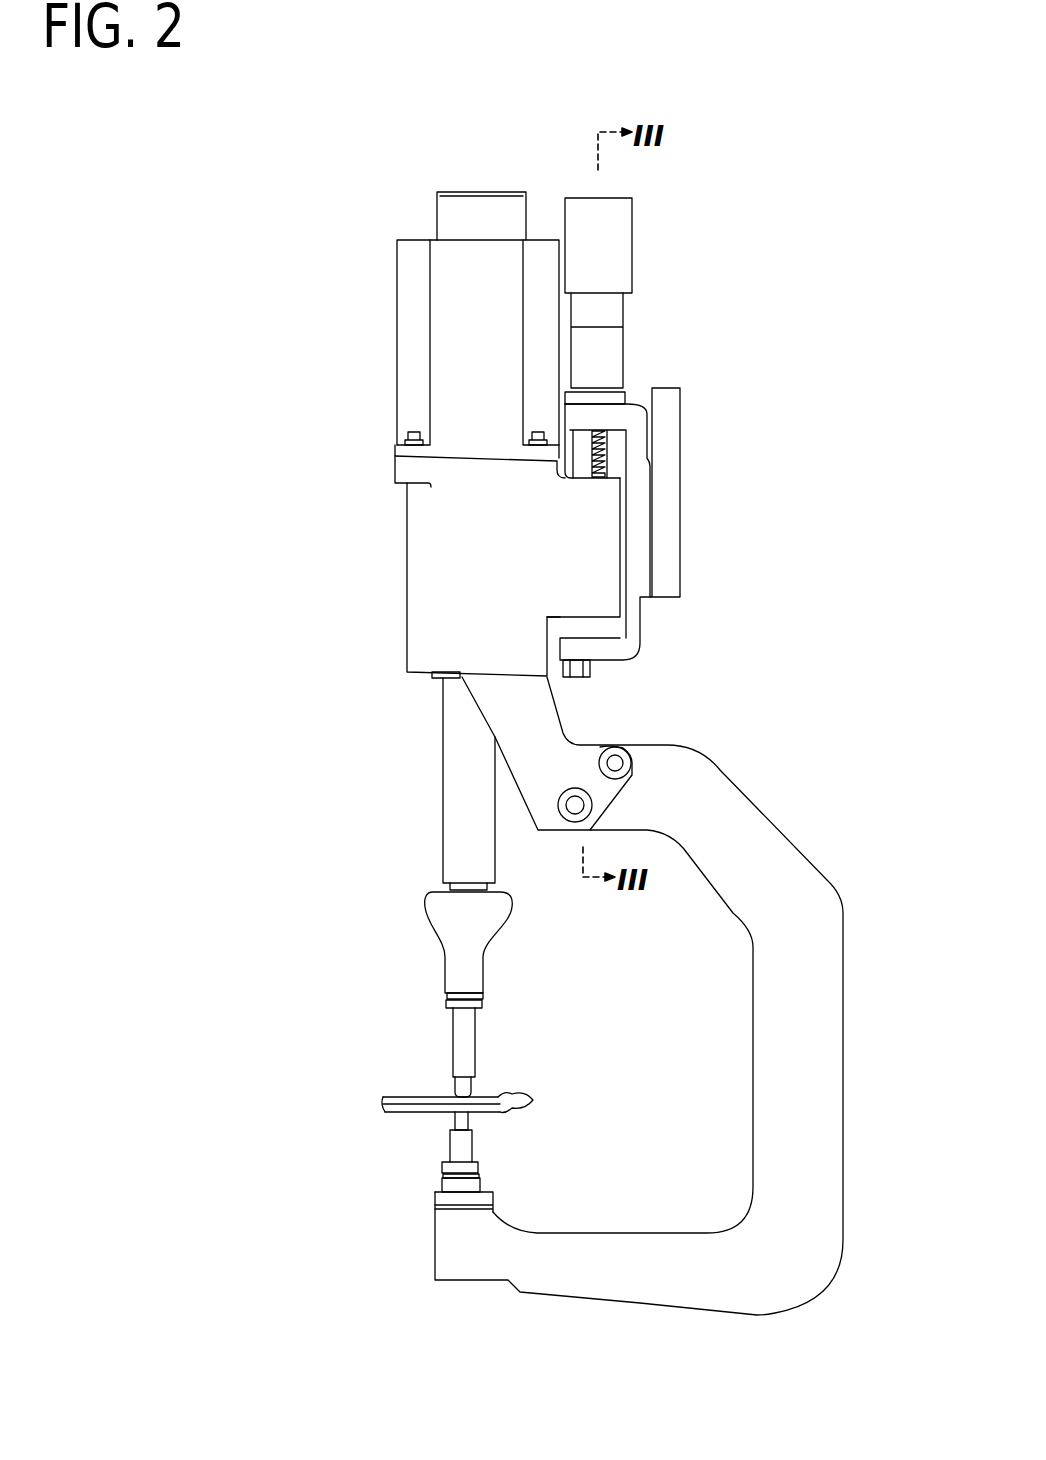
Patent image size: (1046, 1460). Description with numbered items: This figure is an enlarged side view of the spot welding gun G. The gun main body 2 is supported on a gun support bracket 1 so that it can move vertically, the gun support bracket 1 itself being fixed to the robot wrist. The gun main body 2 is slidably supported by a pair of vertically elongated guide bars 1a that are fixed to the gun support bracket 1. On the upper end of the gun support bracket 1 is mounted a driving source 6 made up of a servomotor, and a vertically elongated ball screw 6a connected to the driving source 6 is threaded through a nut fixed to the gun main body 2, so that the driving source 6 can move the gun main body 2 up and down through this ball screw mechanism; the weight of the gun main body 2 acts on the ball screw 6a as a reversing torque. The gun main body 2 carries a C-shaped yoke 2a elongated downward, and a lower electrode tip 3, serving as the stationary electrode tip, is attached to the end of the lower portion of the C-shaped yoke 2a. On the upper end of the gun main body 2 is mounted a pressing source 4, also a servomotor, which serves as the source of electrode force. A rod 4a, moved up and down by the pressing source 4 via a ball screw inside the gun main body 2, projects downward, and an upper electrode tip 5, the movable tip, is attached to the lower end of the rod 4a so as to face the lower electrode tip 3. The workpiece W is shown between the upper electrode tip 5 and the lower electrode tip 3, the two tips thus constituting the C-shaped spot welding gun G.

The gun support bracket 1 is at (670, 573).
The guide bars 1a is at (582, 437).
The gun main body 2 is at (420, 603).
The C-shaped yoke 2a is at (830, 1072).
The lower electrode tip 3 is at (457, 1118).
The pressing source 4 is at (415, 365).
The rod 4a is at (462, 770).
The upper electrode tip 5 is at (453, 1087).
The driving source 6 is at (617, 268).
The ball screw 6a is at (605, 449).
The spot welding gun G is at (642, 227).
The workpiece W is at (481, 1105).